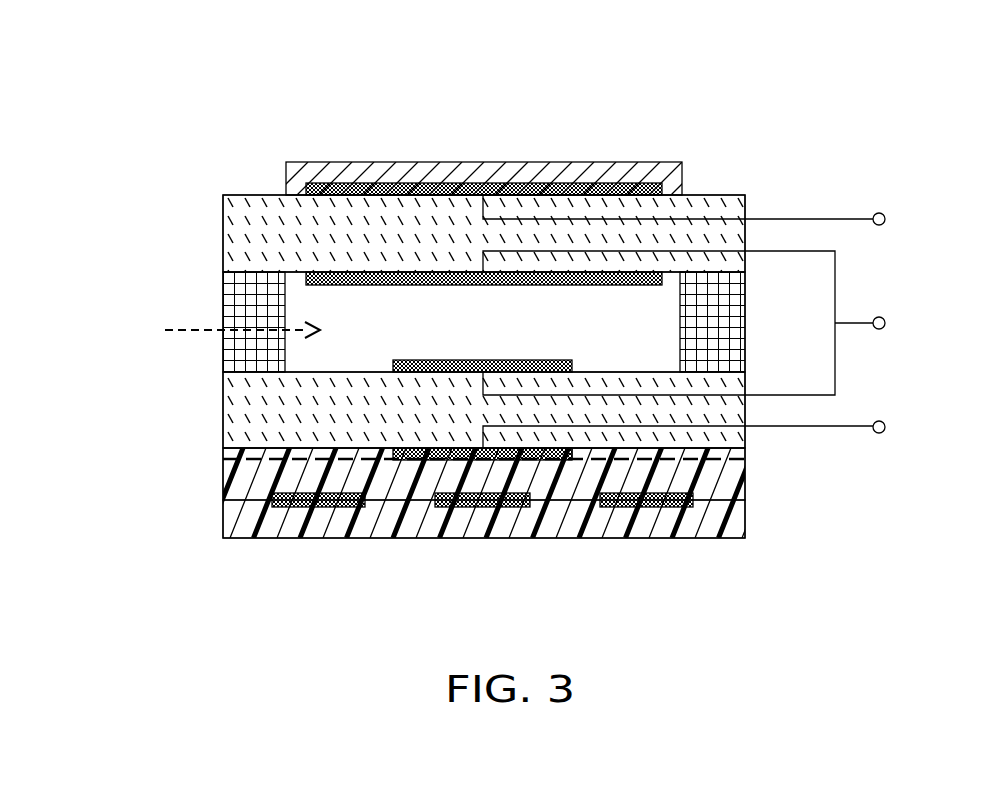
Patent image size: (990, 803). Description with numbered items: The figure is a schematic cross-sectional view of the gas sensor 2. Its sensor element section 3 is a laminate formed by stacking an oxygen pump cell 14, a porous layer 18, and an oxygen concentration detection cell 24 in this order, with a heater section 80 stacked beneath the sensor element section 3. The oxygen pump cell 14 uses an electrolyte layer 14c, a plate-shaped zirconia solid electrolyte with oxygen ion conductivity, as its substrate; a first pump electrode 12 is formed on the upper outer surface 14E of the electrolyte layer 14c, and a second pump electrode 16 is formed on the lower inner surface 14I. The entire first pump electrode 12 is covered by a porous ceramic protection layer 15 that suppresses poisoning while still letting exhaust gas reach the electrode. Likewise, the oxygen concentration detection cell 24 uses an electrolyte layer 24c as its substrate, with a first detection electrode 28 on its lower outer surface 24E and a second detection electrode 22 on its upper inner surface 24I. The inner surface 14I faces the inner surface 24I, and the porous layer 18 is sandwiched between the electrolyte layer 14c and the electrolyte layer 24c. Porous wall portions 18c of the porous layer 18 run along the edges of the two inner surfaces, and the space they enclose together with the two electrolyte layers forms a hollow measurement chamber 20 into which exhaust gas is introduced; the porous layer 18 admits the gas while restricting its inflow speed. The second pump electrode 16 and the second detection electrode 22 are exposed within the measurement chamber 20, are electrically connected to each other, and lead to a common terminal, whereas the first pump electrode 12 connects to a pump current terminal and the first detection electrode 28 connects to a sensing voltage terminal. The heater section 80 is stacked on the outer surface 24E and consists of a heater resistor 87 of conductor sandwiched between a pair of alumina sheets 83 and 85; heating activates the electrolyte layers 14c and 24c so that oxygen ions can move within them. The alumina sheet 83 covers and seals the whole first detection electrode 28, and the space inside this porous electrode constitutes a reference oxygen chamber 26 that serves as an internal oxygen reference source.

The gas sensor 2 is at (278, 110).
The sensor element section 3 is at (73, 228).
The first pump electrode 12 is at (333, 182).
The oxygen pump cell 14 is at (125, 193).
The electrolyte layer 14c is at (230, 237).
The outer surface 14E is at (703, 195).
The inner surface 14I is at (663, 278).
The protection layer 15 is at (482, 162).
The second pump electrode 16 is at (320, 287).
The porous layer 18 is at (237, 356).
The porous wall portions 18c is at (491, 331).
The measurement chamber 20 is at (490, 328).
The second detection electrode 22 is at (400, 358).
The oxygen concentration detection cell 24 is at (125, 402).
The electrolyte layer 24c is at (245, 434).
The outer surface 24E is at (697, 448).
The inner surface 24I is at (667, 373).
The reference oxygen chamber 26 is at (572, 458).
The first detection electrode 28 is at (392, 452).
The heater section 80 is at (825, 480).
The alumina sheet 83 is at (733, 483).
The alumina sheet 85 is at (617, 530).
The heater resistor 87 is at (675, 504).